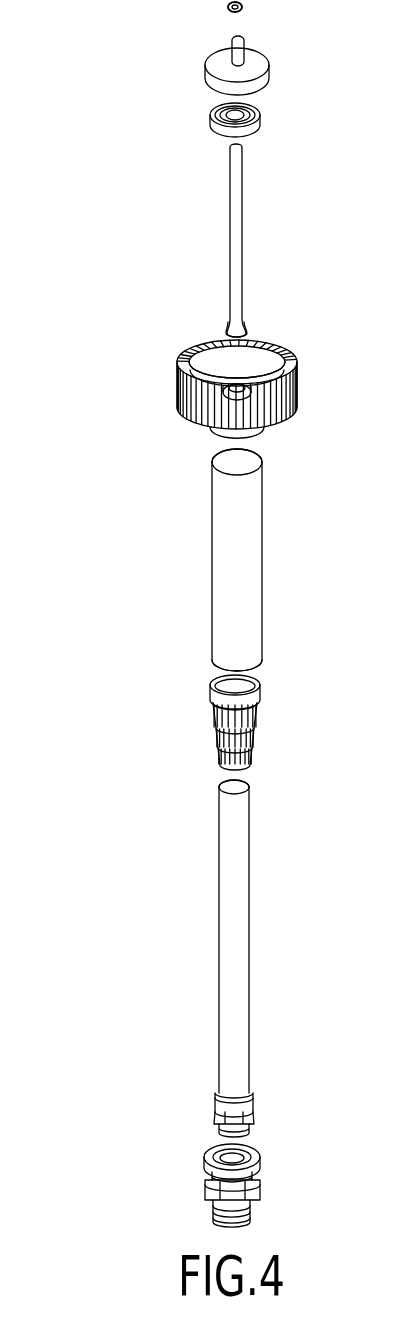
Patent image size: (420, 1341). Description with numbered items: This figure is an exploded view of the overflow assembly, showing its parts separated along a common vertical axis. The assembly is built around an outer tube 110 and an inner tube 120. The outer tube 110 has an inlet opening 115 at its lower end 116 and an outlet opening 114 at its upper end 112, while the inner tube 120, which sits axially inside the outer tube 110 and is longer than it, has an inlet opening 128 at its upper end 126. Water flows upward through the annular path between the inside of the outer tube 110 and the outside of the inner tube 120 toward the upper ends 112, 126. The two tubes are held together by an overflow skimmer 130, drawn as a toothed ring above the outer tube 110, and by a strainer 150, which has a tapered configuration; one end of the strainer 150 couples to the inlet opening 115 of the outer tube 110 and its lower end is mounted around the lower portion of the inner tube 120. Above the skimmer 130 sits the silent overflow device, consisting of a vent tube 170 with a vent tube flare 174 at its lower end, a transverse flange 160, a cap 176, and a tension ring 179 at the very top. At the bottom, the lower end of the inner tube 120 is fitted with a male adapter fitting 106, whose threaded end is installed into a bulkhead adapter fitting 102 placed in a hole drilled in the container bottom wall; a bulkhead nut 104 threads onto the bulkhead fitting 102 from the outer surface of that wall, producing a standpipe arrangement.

The bulkhead adapter fitting 102 is at (205, 1157).
The bulkhead nut 104 is at (210, 1200).
The male adapter fitting 106 is at (215, 1100).
The outer tube 110 is at (248, 563).
The upper end of outer tube 112 is at (262, 462).
The outlet opening of outer tube 114 is at (235, 462).
The inlet opening of outer tube 115 is at (235, 670).
The lower end of outer tube 116 is at (262, 660).
The inner tube 120 is at (240, 932).
The upper end of inner tube 126 is at (252, 788).
The inlet opening of inner tube 128 is at (232, 787).
The overflow skimmer 130 is at (160, 379).
The strainer 150 is at (198, 730).
The transverse flange 160 is at (258, 118).
The vent tube 170 is at (243, 215).
The vent tube flare 174 is at (246, 333).
The cap 176 is at (268, 70).
The tension ring 179 is at (243, 9).